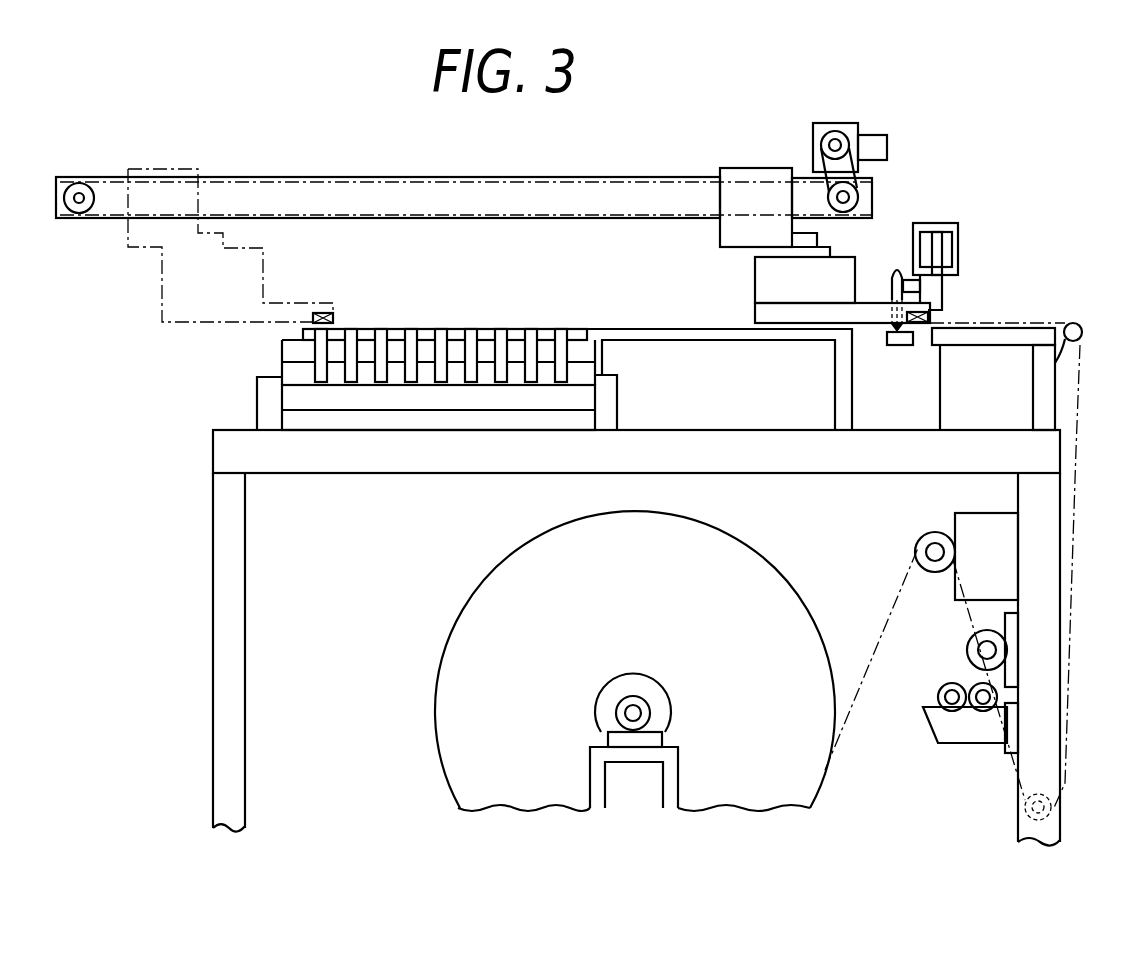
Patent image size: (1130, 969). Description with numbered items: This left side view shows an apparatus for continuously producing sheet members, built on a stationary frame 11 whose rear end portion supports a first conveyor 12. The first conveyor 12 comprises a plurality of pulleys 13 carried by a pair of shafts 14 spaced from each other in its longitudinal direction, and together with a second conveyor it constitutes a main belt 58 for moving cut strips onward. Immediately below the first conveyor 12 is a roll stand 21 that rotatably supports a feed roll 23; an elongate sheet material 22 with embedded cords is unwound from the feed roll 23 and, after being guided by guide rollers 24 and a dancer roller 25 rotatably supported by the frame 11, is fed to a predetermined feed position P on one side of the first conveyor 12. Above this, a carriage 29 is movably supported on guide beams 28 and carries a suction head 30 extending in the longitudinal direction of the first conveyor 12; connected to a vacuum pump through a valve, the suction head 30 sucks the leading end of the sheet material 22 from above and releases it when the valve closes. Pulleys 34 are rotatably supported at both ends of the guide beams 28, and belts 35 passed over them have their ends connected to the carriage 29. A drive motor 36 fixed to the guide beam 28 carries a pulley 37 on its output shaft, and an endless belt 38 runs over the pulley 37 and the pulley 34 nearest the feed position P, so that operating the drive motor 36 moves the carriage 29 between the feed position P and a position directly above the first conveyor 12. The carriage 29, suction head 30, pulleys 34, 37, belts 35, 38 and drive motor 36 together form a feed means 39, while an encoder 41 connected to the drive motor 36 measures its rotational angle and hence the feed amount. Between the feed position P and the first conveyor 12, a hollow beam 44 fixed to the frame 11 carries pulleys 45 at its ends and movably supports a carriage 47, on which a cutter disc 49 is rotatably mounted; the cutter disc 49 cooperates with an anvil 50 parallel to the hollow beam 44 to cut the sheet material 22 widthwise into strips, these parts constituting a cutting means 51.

The stationary frame 11 is at (420, 456).
The first conveyor 12 is at (524, 413).
The pulleys 13 is at (527, 345).
The shafts 14 is at (488, 347).
The roll stand 21 is at (738, 786).
The sheet material 22 is at (870, 648).
The feed roll 23 is at (518, 584).
The guide rollers 24 is at (1076, 323).
The dancer roller 25 is at (1026, 812).
The guide beams 28 is at (444, 177).
The carriage 29 is at (240, 250).
The suction head 30 is at (338, 317).
The pulleys 34 is at (80, 184).
The belts 35 is at (304, 178).
The drive motor 36 is at (813, 133).
The pulley 37 is at (836, 131).
The endless belt 38 is at (822, 163).
The feed means 39 is at (676, 160).
The encoder 41 is at (880, 136).
The hollow beam 44 is at (930, 223).
The pulleys 45 is at (942, 248).
The carriage 47 is at (930, 290).
The cutter disc 49 is at (894, 270).
The anvil 50 is at (905, 345).
The cutting means 51 is at (948, 249).
The main belt 58 is at (571, 320).
The feed position P is at (960, 323).